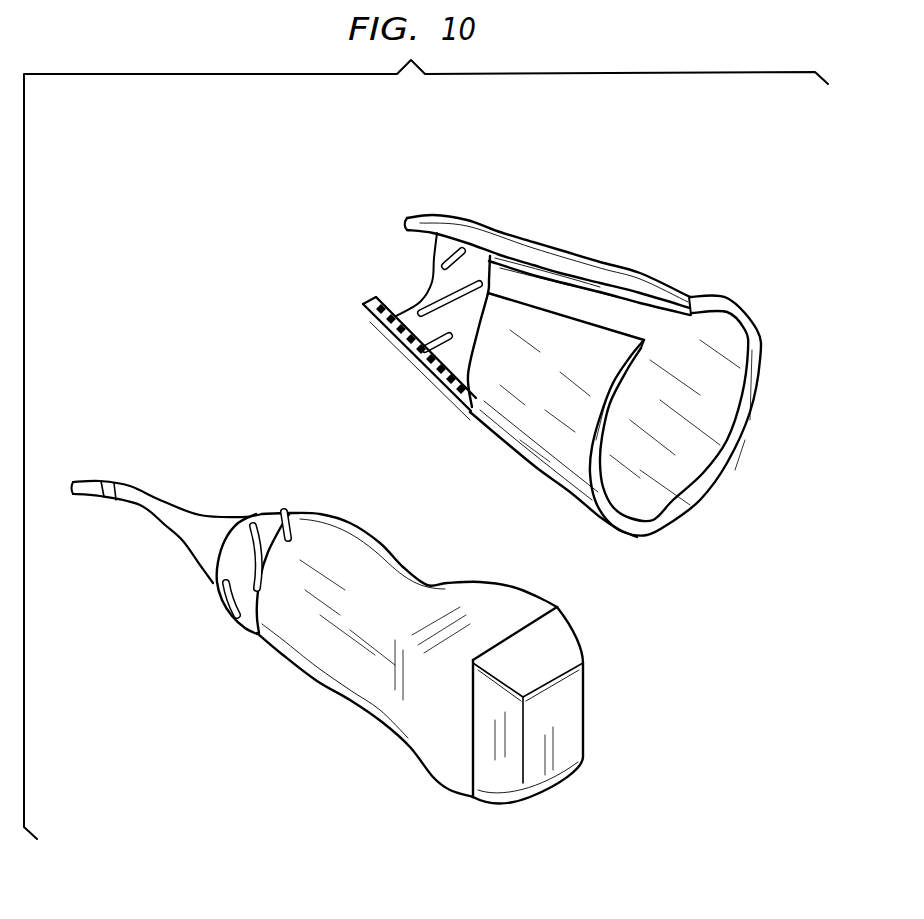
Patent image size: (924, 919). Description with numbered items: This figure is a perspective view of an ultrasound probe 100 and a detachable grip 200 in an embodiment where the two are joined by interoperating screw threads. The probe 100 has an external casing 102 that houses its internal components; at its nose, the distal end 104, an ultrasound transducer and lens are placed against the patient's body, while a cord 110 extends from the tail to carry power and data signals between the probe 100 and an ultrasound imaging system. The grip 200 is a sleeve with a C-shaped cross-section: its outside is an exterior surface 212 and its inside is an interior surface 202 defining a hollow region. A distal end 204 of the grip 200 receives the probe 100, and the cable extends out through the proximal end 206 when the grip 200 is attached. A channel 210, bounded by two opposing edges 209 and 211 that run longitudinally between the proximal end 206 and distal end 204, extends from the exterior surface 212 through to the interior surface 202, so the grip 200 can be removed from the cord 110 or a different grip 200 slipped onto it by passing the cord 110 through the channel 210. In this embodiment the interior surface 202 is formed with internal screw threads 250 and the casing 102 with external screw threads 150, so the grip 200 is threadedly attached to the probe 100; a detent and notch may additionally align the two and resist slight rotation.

The probe 100 is at (282, 769).
The external casing 102 is at (318, 682).
The distal end 104 is at (573, 729).
The cord 110 is at (100, 492).
The external screw threads 150 is at (222, 608).
The grip 200 is at (706, 238).
The interior surface 202 is at (685, 463).
The distal end 204 is at (705, 452).
The proximal end 206 is at (425, 228).
The edge 209 is at (520, 302).
The channel 210 is at (607, 320).
The edge 211 is at (580, 281).
The exterior surface 212 is at (554, 380).
The internal screw threads 250 is at (426, 306).